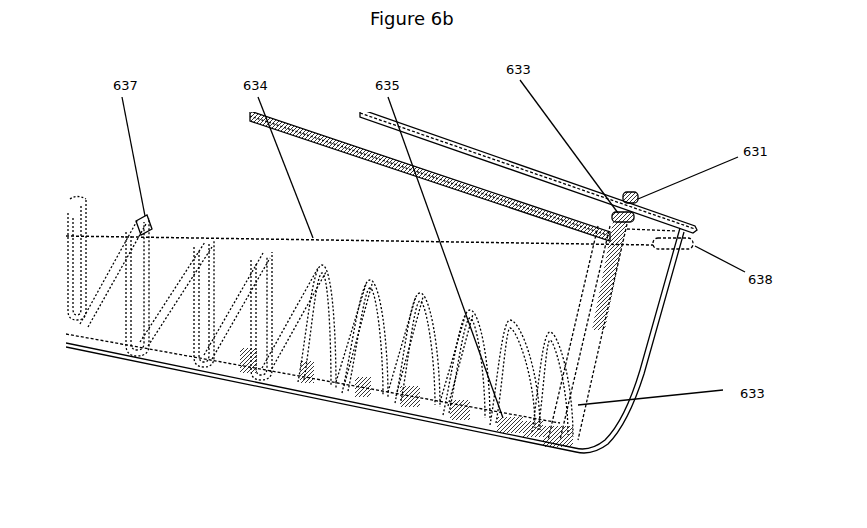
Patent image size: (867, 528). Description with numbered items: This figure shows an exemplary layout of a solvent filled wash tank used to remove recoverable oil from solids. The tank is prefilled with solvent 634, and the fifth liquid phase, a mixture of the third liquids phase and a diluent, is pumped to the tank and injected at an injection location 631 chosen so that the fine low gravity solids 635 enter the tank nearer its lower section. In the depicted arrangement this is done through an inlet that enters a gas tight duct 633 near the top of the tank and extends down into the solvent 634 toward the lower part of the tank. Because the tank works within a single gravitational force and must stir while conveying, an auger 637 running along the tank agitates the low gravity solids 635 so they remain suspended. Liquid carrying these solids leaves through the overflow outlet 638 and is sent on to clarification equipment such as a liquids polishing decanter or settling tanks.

The injection location 631 is at (638, 199).
The gas tight duct 633 is at (618, 213).
The solvent 634 is at (313, 238).
The low gravity solids 635 is at (503, 418).
The auger 637 is at (145, 216).
The overflow outlet 638 is at (695, 246).